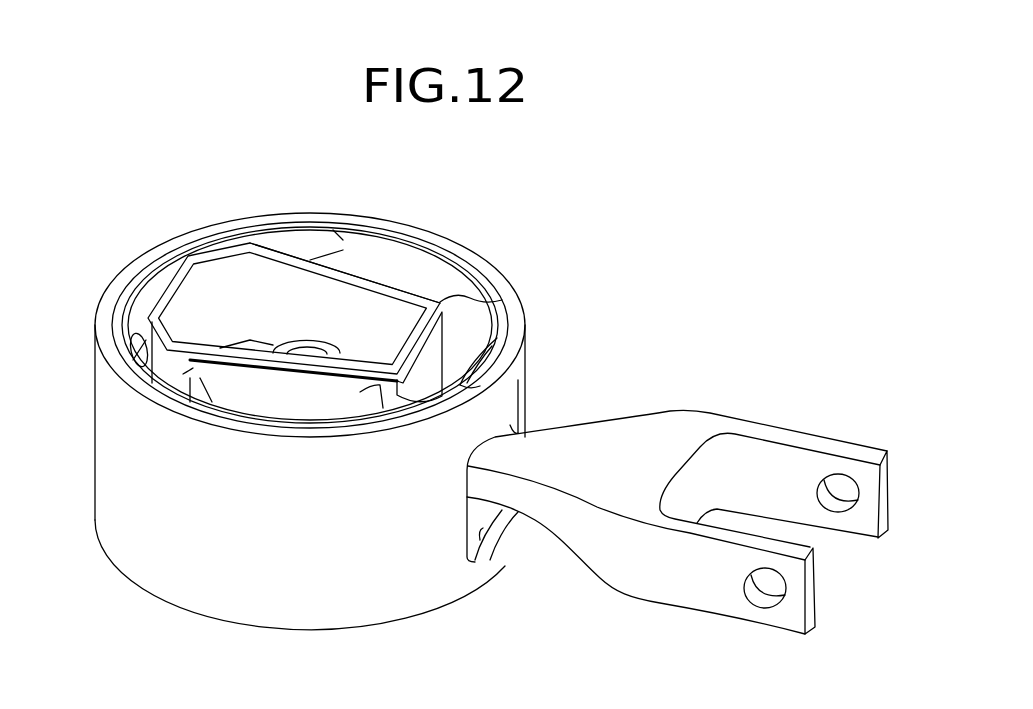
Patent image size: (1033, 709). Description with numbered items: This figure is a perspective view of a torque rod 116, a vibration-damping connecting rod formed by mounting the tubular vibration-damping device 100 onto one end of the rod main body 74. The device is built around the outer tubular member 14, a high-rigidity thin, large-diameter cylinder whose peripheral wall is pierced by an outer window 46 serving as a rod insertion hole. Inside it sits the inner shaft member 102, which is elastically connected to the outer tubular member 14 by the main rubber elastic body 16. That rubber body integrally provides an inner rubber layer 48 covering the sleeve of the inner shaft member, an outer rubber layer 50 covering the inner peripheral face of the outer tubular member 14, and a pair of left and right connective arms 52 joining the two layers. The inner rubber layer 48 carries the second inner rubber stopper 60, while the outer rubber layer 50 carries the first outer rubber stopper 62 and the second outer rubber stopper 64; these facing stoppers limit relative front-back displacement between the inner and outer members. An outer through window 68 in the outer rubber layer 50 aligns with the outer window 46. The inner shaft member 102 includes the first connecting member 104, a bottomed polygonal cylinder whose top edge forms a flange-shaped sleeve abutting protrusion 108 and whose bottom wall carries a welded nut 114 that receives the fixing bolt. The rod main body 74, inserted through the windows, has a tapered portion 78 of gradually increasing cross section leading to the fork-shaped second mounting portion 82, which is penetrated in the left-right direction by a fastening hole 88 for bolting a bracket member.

The outer tubular member 14 is at (94, 553).
The main rubber elastic body 16 is at (318, 250).
The outer window 46 is at (537, 408).
The inner rubber layer 48 is at (185, 371).
The outer rubber layer 50 is at (123, 297).
The connective arm 52 is at (424, 272).
The second inner rubber stopper 60 is at (435, 358).
The first outer rubber stopper 62 is at (133, 352).
The second outer rubber stopper 64 is at (482, 368).
The outer through window 68 is at (483, 528).
The rod main body 74 is at (810, 405).
The tapered portion 78 is at (634, 420).
The second mounting portion 82 is at (712, 612).
The fastening hole 88 is at (843, 497).
The tubular vibration-damping device 100 is at (555, 275).
The inner shaft member 102 is at (210, 250).
The first connecting member 104 is at (352, 272).
The sleeve abutting protrusion 108 is at (177, 287).
The nut 114 is at (298, 343).
The torque rod 116 is at (727, 300).